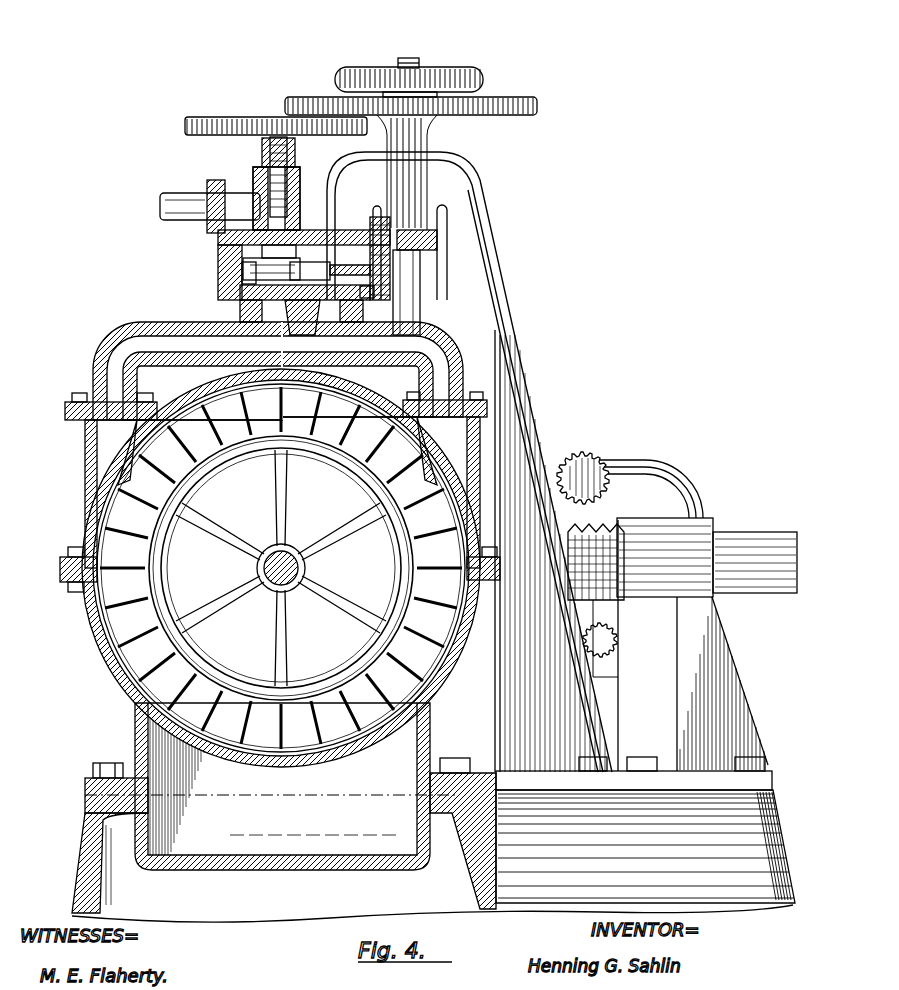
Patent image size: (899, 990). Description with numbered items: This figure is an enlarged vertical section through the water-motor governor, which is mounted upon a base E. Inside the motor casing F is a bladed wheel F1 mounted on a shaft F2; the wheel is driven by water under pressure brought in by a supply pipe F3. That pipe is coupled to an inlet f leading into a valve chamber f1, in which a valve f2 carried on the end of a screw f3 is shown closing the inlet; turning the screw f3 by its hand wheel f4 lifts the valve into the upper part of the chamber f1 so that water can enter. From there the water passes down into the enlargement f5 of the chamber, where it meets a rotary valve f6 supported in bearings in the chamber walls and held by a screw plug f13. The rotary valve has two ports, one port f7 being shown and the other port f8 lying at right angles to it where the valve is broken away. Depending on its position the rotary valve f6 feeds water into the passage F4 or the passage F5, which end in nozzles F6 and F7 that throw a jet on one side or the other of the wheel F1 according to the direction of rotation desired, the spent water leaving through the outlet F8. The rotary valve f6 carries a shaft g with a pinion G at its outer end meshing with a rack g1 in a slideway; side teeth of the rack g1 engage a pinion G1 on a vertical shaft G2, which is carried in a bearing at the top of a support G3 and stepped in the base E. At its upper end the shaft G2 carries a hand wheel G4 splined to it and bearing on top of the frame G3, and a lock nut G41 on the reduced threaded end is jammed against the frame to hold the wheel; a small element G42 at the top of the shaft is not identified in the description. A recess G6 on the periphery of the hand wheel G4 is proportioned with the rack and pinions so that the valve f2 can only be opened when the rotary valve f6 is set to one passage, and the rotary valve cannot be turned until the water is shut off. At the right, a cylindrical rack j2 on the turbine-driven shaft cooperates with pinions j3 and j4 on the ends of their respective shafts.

The hand wheel nut G42 is at (407, 57).
The lock nut G41 is at (455, 67).
The hand wheel G4 is at (520, 100).
The recess G6 is at (312, 100).
The pinion G1 is at (437, 240).
The pinion G is at (392, 283).
The vertical shaft G2 is at (422, 290).
The support G3 is at (547, 462).
The rack g1 is at (375, 238).
The shaft g is at (361, 299).
The hand wheel f4 is at (220, 112).
The screw f3 is at (262, 148).
The valve chamber f1 is at (290, 180).
The valve f2 is at (292, 210).
The inlet f is at (247, 192).
The port f8 is at (220, 265).
The screw plug f13 is at (240, 276).
The enlargement of the chamber f5 is at (279, 252).
The rotary valve f6 is at (271, 269).
The port f7 is at (310, 271).
The supply pipe F3 is at (162, 213).
The passage F4 is at (130, 335).
The passage F5 is at (447, 352).
The nozzle F6 is at (90, 452).
The nozzle F7 is at (462, 453).
The motor casing F is at (108, 635).
The bladed wheel F1 is at (243, 460).
The shaft F2 is at (290, 556).
The outlet F8 is at (270, 786).
The base E is at (433, 835).
The pinion j3 is at (572, 445).
The cylindrical rack j2 is at (617, 585).
The pinion j4 is at (616, 645).